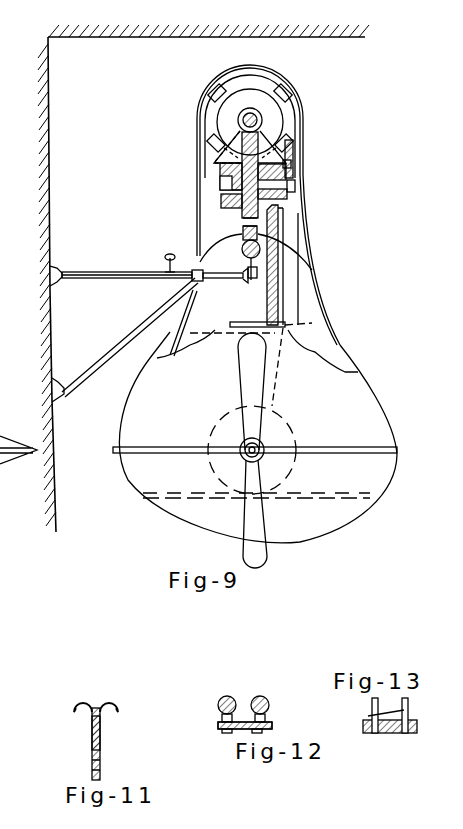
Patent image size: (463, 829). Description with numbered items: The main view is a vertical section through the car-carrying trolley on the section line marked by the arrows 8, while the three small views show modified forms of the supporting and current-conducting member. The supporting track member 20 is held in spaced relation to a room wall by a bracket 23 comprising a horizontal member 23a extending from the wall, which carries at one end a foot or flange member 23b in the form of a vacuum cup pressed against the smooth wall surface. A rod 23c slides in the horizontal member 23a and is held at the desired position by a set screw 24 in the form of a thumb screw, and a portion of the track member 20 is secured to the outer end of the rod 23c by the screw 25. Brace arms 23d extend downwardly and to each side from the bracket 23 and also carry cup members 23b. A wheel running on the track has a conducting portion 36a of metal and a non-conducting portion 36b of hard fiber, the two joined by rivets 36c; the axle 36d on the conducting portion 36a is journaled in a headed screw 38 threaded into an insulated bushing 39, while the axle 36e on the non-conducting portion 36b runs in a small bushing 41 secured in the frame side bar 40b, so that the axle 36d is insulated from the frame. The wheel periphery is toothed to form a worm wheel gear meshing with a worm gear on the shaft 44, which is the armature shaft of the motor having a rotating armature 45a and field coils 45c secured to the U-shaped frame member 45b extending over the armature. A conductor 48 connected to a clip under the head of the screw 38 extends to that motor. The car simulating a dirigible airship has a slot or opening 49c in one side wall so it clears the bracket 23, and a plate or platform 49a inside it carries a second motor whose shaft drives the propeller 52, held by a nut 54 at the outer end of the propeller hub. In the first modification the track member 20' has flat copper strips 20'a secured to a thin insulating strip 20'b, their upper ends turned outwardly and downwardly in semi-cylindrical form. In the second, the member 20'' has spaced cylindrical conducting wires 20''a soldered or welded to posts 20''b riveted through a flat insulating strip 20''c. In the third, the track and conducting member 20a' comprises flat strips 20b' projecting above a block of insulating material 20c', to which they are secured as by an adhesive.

In FIG. 9, the section line 8- 8 is at (393, 292).
In FIG. 9, the supporting track member 20 is at (235, 206).
In FIG. 9, the bracket 23 is at (141, 291).
In FIG. 9, the horizontal member 23a is at (105, 272).
In FIG. 9, the foot or flange member 23b is at (60, 283).
In FIG. 9, the rod 23c is at (204, 281).
In FIG. 9, the brace arms 23d is at (103, 334).
In FIG. 9, the set screw 24 is at (170, 256).
In FIG. 9, the screw 25 is at (262, 287).
In FIG. 9, the conducting portion of wheel 36a is at (268, 134).
In FIG. 9, the non-conducting portion of wheel 36b is at (226, 140).
In FIG. 9, the rivets 36c is at (244, 222).
In FIG. 9, the axle 36d is at (287, 179).
In FIG. 9, the axle 36e is at (222, 183).
In FIG. 9, the headed screw 38 is at (292, 193).
In FIG. 9, the insulated bushing 39 is at (280, 216).
In FIG. 9, the side bar of frame 40b is at (158, 207).
In FIG. 9, the small bushing 41 is at (222, 201).
In FIG. 9, the shaft 44 is at (238, 118).
In FIG. 9, the rotating armature 45a is at (256, 76).
In FIG. 9, the frame member 45b is at (290, 113).
In FIG. 9, the field coils 45c is at (270, 102).
In FIG. 9, the conductor 48 is at (293, 160).
In FIG. 9, the plate or platform 49a is at (192, 498).
In FIG. 9, the slot or opening 49c is at (192, 292).
In FIG. 9, the propeller 52 is at (262, 550).
In FIG. 9, the nut 54 is at (263, 444).
In FIG. 11, the track member 20' is at (57, 728).
In FIG. 11, the flat strips 20'a is at (91, 724).
In FIG. 11, the strip of insulating material 20'b is at (115, 760).
In FIG. 12, the track member 20'' is at (218, 707).
In FIG. 12, the cylindrical conducting wires 20''a is at (243, 694).
In FIG. 12, the posts 20''b is at (268, 713).
In FIG. 12, the flat strip of insulating material 20''c is at (231, 736).
In FIG. 13, the track and conducting member 20a' is at (410, 706).
In FIG. 13, the flat strips 20b' is at (364, 718).
In FIG. 13, the block of insulating material 20c' is at (387, 737).